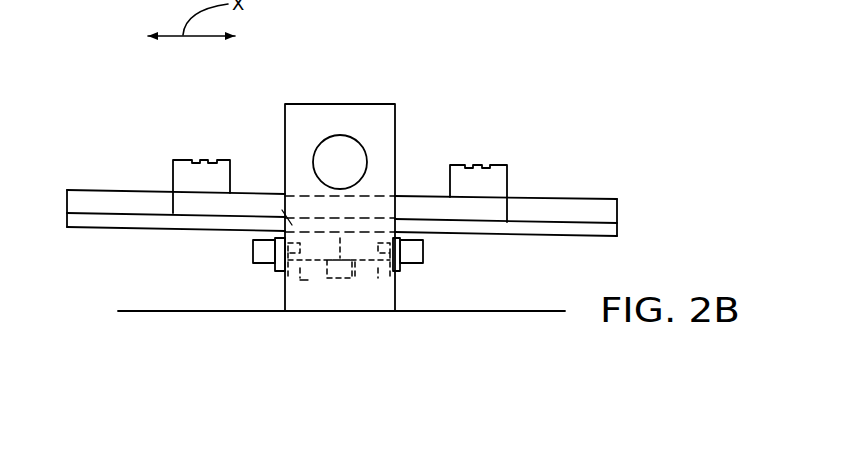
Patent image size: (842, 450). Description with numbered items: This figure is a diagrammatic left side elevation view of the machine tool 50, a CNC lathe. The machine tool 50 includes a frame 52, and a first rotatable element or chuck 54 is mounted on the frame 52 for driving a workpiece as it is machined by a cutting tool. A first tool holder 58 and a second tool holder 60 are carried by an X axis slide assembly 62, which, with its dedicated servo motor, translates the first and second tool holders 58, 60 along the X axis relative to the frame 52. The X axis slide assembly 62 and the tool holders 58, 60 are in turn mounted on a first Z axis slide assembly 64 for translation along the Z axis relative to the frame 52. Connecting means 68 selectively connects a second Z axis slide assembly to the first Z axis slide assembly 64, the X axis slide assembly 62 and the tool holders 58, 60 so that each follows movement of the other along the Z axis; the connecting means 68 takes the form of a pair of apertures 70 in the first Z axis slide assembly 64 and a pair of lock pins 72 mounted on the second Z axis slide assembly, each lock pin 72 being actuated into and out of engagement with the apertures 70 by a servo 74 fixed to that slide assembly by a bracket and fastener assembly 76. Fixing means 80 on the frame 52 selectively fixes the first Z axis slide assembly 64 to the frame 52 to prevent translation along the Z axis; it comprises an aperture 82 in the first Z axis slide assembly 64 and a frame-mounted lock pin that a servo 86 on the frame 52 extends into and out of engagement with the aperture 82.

The machine tool 50 is at (352, 60).
The frame 52 is at (335, 313).
The first rotatable element or chuck 54 is at (355, 152).
The first tool holder 58 is at (498, 172).
The second tool holder 60 is at (173, 172).
The X axis slide assembly 62 is at (118, 192).
The first Z axis slide assembly 64 is at (304, 282).
The connecting means 68 is at (220, 243).
The apertures 70 is at (292, 258).
The lock pins 72 is at (388, 272).
The servo 74 is at (253, 253).
The bracket and fastener assembly 76 is at (277, 268).
The fixing means 80 is at (342, 284).
The aperture 82 is at (315, 238).
The servo 86 is at (355, 268).